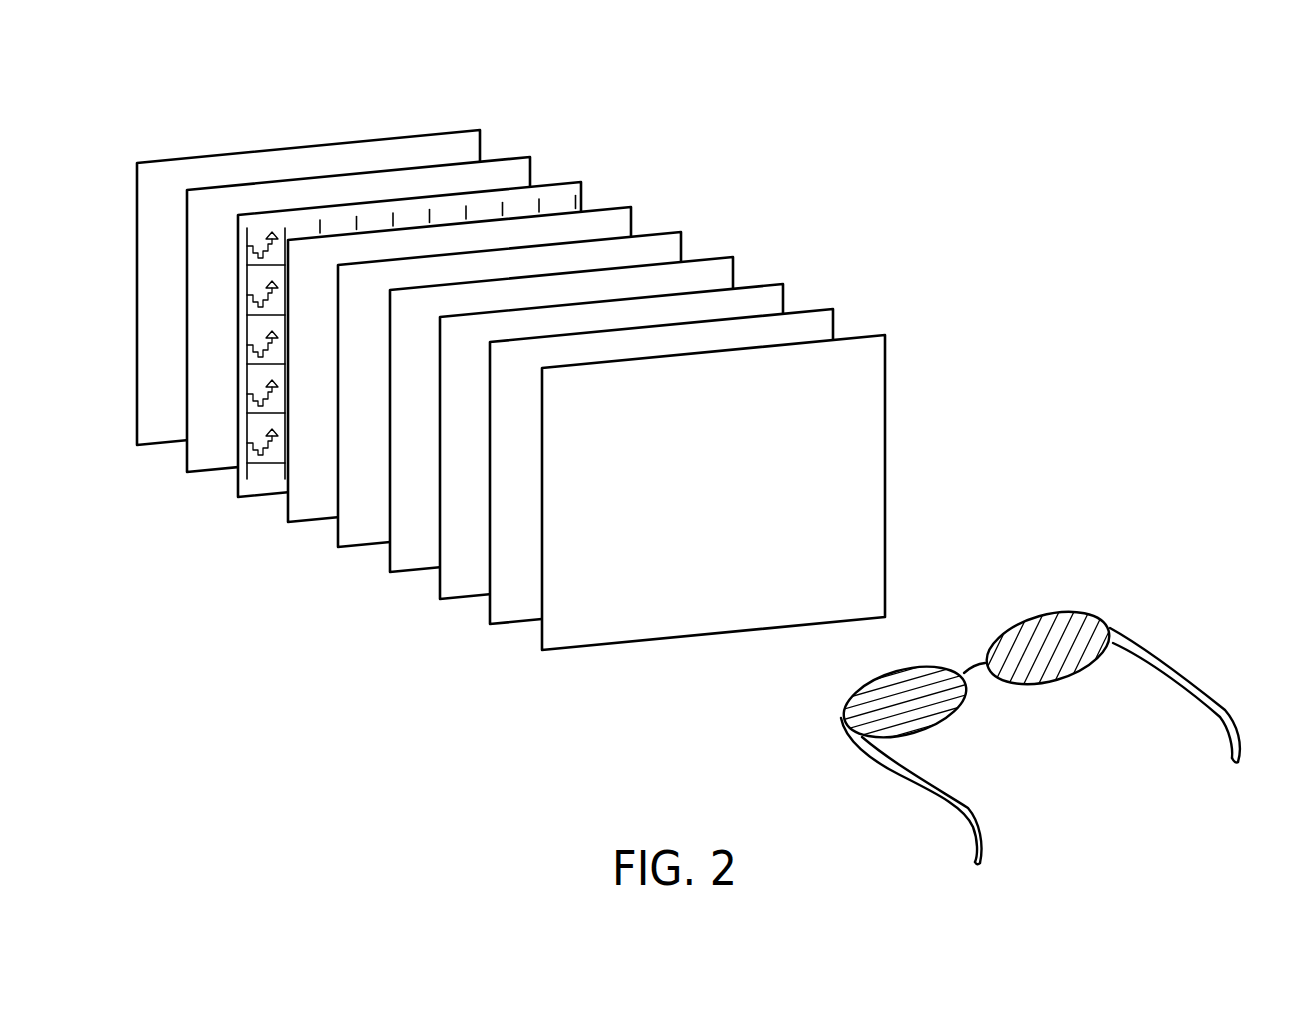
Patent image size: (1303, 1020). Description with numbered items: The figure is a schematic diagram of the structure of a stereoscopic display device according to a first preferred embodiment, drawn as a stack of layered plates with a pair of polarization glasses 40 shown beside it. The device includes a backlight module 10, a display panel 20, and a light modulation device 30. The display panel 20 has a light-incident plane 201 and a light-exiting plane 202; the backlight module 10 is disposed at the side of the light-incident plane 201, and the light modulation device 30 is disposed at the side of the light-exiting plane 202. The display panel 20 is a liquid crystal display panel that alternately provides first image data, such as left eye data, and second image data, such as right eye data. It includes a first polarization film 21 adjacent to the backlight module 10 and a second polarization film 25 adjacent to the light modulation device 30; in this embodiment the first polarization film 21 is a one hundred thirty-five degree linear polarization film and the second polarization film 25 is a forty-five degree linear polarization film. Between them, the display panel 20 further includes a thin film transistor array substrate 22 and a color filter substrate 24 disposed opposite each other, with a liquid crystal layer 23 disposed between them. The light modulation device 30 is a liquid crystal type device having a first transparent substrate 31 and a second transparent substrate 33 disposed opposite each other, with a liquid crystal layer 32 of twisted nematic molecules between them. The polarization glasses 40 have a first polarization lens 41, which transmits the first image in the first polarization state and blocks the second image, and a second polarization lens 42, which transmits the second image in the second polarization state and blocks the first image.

The backlight module 10 is at (480, 130).
The display panel 20 is at (527, 312).
The first polarization film 21 is at (532, 155).
The thin film transistor array substrate 22 is at (581, 182).
The liquid crystal layer 23 is at (631, 207).
The color filter substrate 24 is at (681, 232).
The second polarization film 25 is at (733, 257).
The light modulation device 30 is at (729, 433).
The first transparent substrate 31 is at (783, 284).
The liquid crystal layer 32 is at (833, 309).
The second transparent substrate 33 is at (885, 334).
The polarization glasses 40 is at (1034, 681).
The first polarization lens 41 is at (903, 665).
The second polarization lens 42 is at (1057, 614).
The light-incident plane 201 is at (186, 452).
The light-exiting plane 202 is at (405, 557).